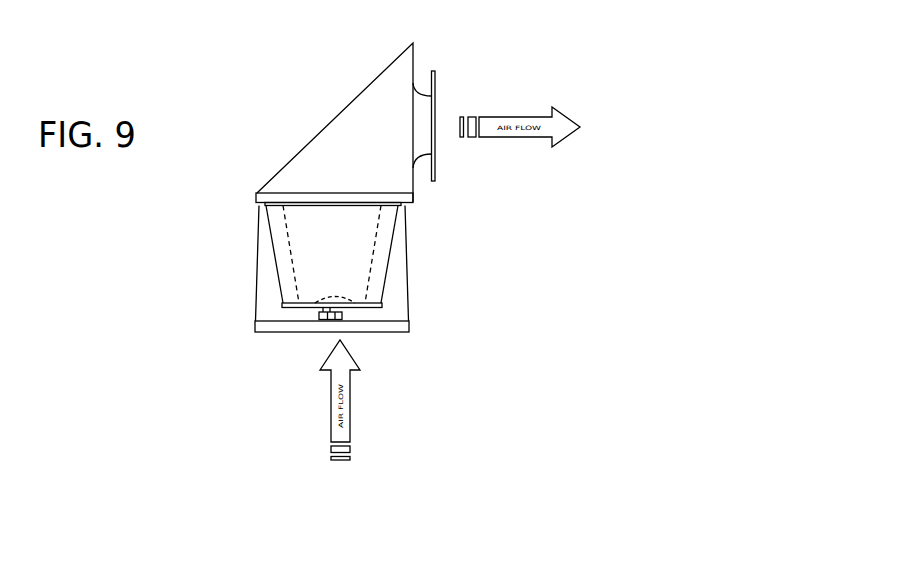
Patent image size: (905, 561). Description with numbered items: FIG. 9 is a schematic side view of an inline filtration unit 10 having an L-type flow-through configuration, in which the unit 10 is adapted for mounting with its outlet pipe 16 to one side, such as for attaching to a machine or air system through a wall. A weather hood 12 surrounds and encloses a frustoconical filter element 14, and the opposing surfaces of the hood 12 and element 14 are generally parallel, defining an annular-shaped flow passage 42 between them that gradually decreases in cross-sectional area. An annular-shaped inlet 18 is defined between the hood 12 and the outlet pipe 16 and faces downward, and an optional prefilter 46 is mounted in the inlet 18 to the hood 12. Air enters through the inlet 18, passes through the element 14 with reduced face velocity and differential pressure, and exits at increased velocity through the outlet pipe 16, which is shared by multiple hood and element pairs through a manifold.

The filtration unit 10 is at (532, 287).
The weather hood 12 is at (407, 277).
The filter element 14 is at (288, 284).
The outlet pipe 16 is at (423, 112).
The inlet 18 is at (287, 332).
The annular-shaped flow passage 42 is at (267, 261).
The prefilter 46 is at (355, 323).